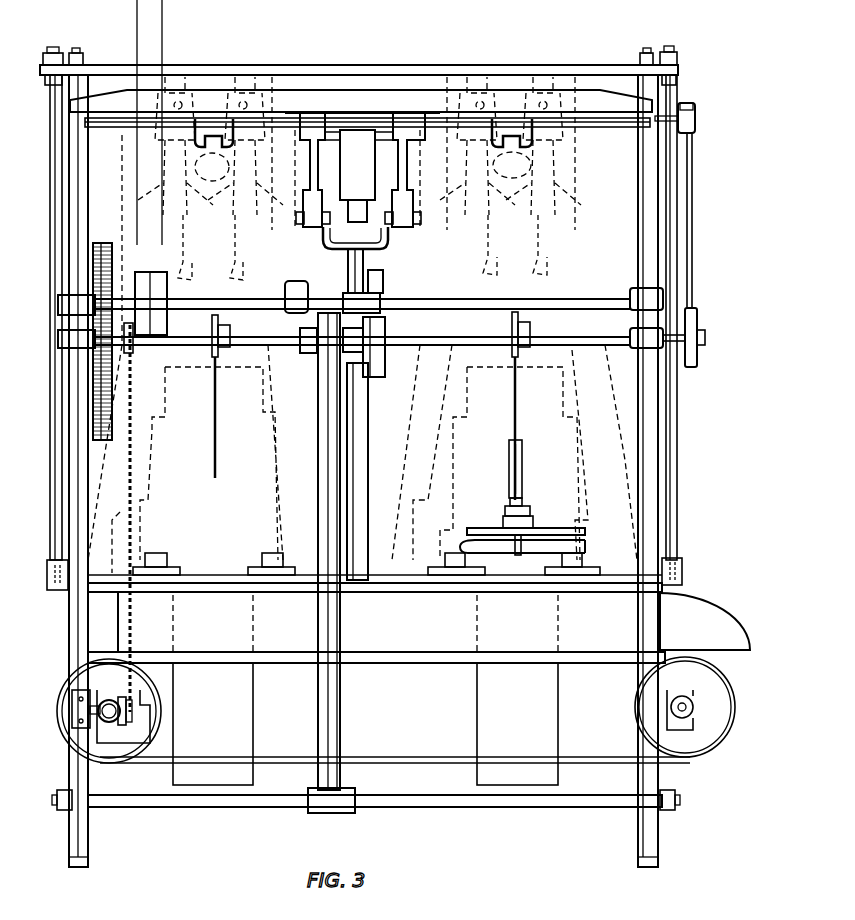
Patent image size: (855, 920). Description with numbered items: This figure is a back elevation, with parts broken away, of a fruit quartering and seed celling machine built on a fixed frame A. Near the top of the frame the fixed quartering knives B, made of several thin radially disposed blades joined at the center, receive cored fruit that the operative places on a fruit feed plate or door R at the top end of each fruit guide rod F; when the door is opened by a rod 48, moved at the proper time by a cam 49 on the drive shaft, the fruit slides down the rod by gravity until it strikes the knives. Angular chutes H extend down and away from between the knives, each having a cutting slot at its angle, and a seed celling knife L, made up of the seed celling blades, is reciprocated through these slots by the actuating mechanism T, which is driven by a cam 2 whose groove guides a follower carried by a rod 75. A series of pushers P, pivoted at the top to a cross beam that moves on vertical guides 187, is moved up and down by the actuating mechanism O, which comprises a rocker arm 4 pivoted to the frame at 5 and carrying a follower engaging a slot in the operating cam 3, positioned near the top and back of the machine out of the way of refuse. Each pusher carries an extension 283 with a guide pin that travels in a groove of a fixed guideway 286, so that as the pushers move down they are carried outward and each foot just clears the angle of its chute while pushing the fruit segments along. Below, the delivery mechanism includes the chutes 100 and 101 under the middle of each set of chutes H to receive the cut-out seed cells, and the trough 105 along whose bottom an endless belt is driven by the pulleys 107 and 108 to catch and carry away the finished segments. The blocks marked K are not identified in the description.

The vertical guides 187 is at (79, 55).
The fruit guide rod F is at (215, 82).
The fixed frame A is at (362, 66).
The fruit feed plate or door R is at (363, 134).
The extension 283 is at (472, 188).
The rod 48 is at (694, 210).
The pushers P is at (233, 247).
The actuating mechanism O is at (349, 265).
The rocker arm 4 is at (364, 265).
The operating cam 3 is at (384, 282).
The pivot 5 is at (438, 299).
The cam 2 is at (229, 318).
The cam 49 is at (703, 355).
The fixed guideway 286 is at (608, 408).
The quartering knives B is at (563, 376).
The rod 75 is at (520, 413).
The angular chutes H is at (510, 457).
The actuating mechanism T is at (524, 504).
The seed celling knife L is at (492, 530).
The support blocks K is at (167, 559).
The trough 105 is at (434, 622).
The pulley 108 is at (109, 503).
The chute 101 is at (213, 690).
The chute 100 is at (517, 690).
The pulley 107 is at (685, 707).